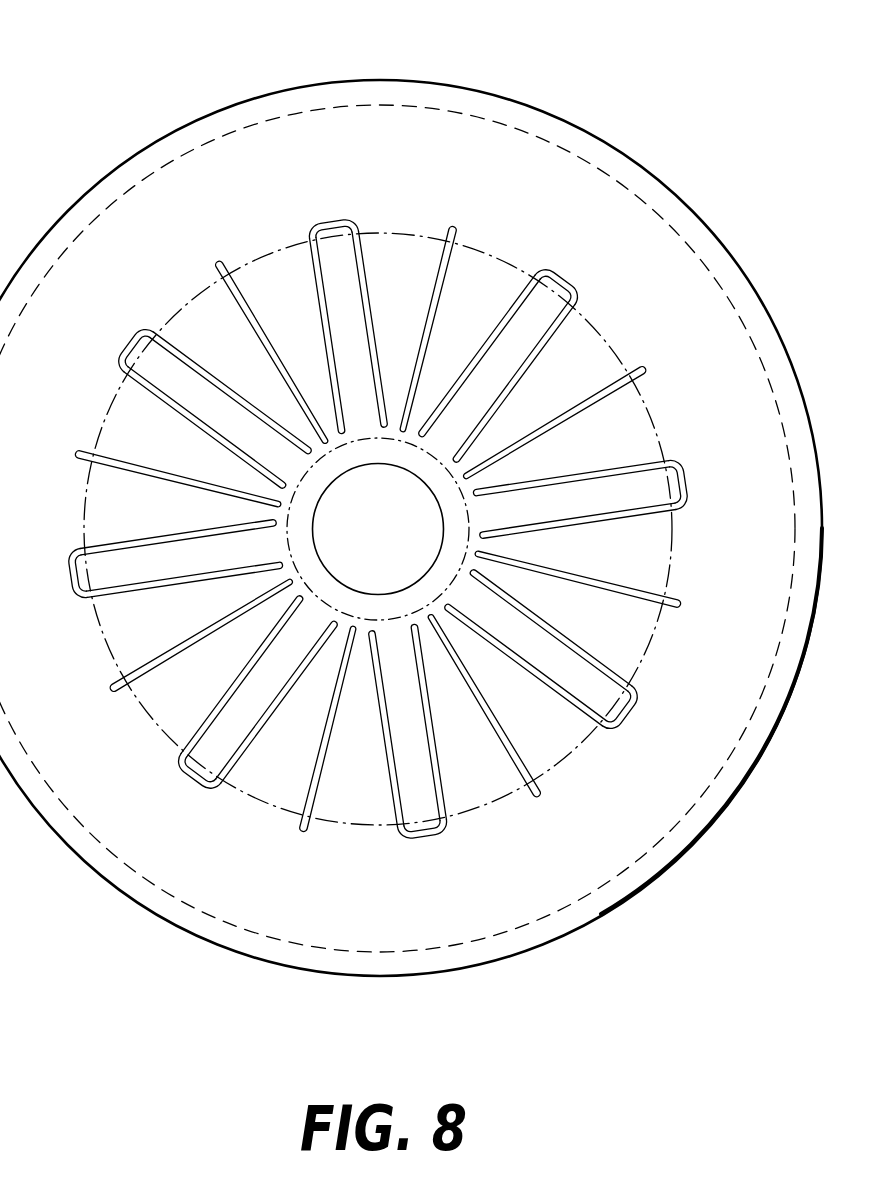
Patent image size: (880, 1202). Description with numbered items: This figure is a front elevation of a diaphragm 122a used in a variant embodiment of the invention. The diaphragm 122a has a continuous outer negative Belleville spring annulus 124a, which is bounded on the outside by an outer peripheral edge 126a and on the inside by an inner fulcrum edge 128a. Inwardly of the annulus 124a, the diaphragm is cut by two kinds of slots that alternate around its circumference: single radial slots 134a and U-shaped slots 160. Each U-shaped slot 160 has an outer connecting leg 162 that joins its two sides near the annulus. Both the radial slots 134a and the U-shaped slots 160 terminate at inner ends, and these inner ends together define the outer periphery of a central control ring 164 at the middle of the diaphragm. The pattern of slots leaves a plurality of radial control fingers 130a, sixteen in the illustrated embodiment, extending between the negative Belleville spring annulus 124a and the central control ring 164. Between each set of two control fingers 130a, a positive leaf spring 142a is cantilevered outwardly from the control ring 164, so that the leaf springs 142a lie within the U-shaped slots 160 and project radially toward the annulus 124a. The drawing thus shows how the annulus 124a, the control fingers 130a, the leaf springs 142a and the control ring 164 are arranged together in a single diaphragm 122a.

The diaphragm 122a is at (411, 501).
The continuous outer negative Belleville spring annulus 124a is at (470, 168).
The outer peripheral edge 126a is at (416, 80).
The inner fulcrum edge 128a is at (607, 338).
The radial control fingers 130a is at (430, 275).
The single radial slots 134a is at (268, 346).
The positive leaf springs 142a is at (338, 308).
The U-shaped slots 160 is at (466, 378).
The outer connecting leg 162 is at (410, 502).
The central control ring 164 is at (420, 598).